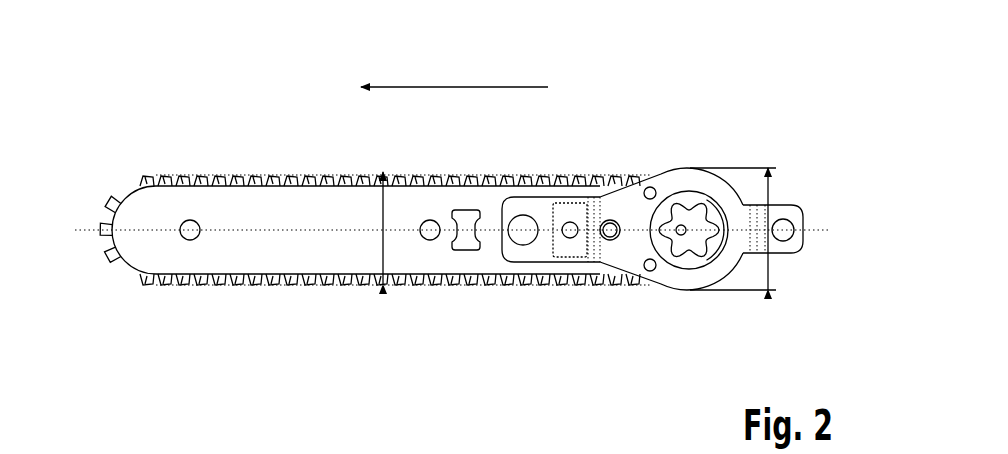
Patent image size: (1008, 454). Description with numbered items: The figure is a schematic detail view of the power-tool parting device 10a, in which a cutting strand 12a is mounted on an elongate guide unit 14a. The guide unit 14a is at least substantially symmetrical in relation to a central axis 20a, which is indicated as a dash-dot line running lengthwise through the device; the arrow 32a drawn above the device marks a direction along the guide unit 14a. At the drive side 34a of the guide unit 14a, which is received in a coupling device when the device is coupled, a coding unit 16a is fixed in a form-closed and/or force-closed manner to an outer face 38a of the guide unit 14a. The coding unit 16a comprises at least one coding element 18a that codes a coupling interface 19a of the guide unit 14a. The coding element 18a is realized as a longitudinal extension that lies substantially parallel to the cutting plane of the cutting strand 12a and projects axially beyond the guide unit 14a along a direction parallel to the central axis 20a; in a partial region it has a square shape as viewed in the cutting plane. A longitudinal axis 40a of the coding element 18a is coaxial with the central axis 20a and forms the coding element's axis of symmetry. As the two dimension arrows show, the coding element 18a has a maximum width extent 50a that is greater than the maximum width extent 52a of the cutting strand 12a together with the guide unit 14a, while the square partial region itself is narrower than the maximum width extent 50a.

The power-tool parting device 10a is at (720, 96).
The cutting strand 12a is at (163, 178).
The guide unit 14a is at (250, 205).
The coding unit 16a is at (645, 300).
The coding element 18a is at (780, 210).
The coupling interface 19a is at (733, 314).
The central axis 20a is at (95, 232).
The cutting direction 32a is at (465, 87).
The drive side 34a is at (789, 287).
The outer face 38a is at (307, 242).
The longitudinal axis 40a is at (818, 230).
The maximum width extent 50a is at (790, 258).
The maximum width extent 52a is at (383, 220).